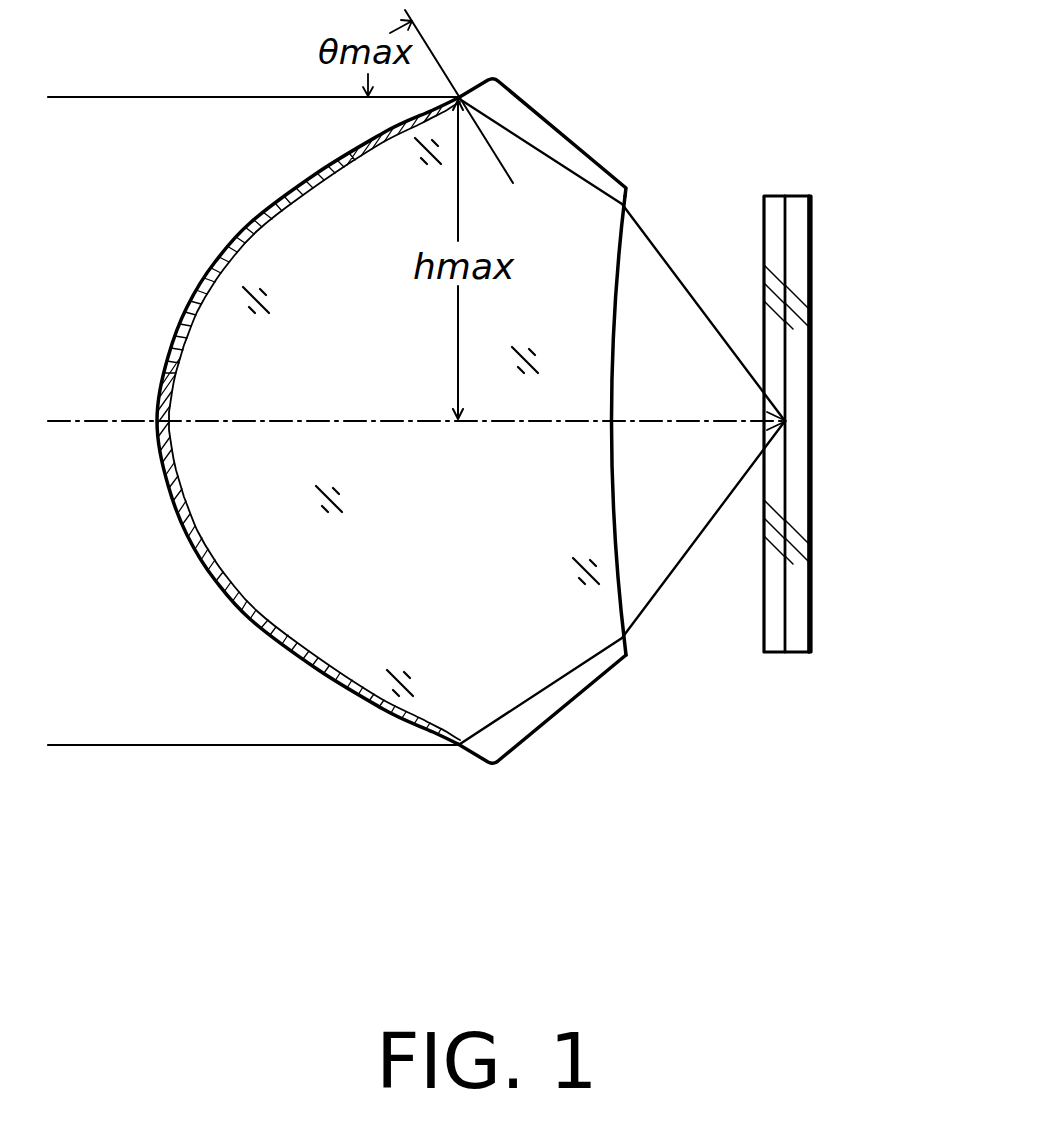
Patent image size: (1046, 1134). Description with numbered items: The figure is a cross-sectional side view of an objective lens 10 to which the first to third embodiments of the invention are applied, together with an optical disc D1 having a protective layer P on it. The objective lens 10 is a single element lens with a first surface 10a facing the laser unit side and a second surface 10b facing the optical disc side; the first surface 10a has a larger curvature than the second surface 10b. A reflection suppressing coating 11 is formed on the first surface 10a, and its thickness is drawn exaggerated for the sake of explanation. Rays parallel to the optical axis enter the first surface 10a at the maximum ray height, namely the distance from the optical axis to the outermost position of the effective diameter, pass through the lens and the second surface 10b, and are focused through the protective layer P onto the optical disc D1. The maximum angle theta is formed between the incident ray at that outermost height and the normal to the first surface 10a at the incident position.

The objective lens 10 is at (420, 414).
The first surface 10a is at (256, 222).
The second surface 10b is at (616, 502).
The reflection suppressing coating 11 is at (197, 557).
The protective layer P is at (770, 267).
The optical disc D1 is at (812, 331).